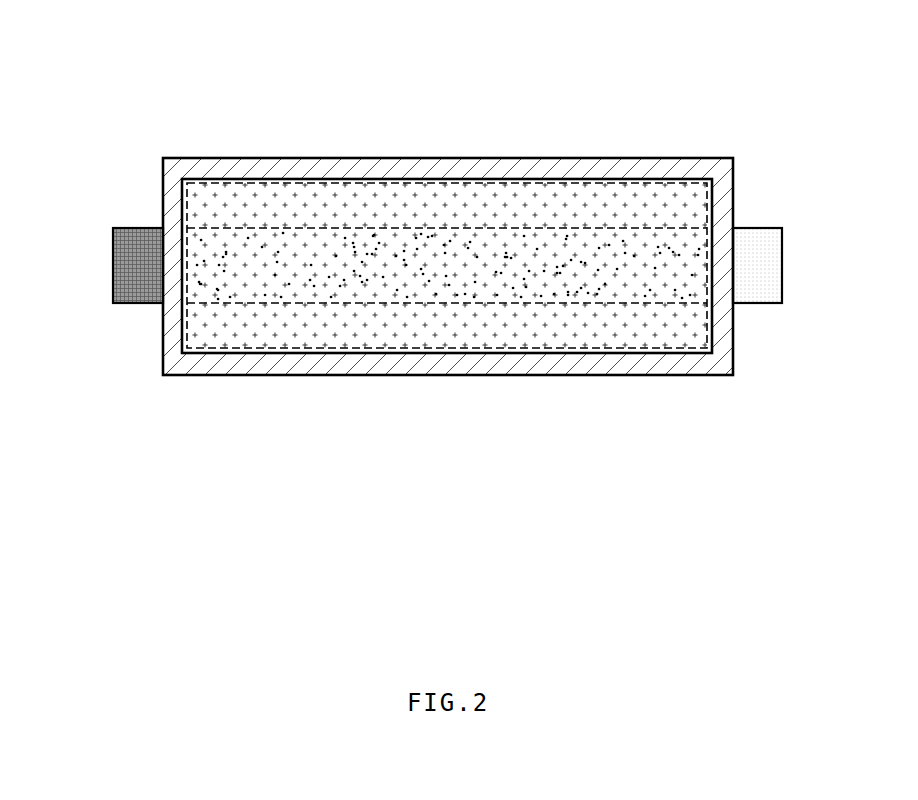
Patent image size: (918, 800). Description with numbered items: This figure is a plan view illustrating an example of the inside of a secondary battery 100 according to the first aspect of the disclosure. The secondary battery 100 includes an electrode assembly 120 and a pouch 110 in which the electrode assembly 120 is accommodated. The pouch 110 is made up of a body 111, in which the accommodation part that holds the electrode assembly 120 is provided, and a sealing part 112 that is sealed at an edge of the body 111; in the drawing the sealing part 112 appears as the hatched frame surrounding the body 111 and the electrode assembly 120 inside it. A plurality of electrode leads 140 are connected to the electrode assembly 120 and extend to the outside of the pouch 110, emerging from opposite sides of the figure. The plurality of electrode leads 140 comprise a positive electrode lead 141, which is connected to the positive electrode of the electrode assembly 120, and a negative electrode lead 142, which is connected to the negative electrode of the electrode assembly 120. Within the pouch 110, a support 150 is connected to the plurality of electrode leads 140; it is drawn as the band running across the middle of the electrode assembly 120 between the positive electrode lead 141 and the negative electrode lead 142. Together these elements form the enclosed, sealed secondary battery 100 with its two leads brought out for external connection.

The secondary battery 100 is at (786, 37).
The pouch 110 is at (506, 219).
The body 111 is at (446, 180).
The sealing part 112 is at (720, 198).
The electrode assembly 120 is at (448, 328).
The plurality of electrode leads 140 is at (447, 357).
The positive electrode lead 141 is at (135, 263).
The negative electrode lead 142 is at (758, 267).
The support 150 is at (224, 282).